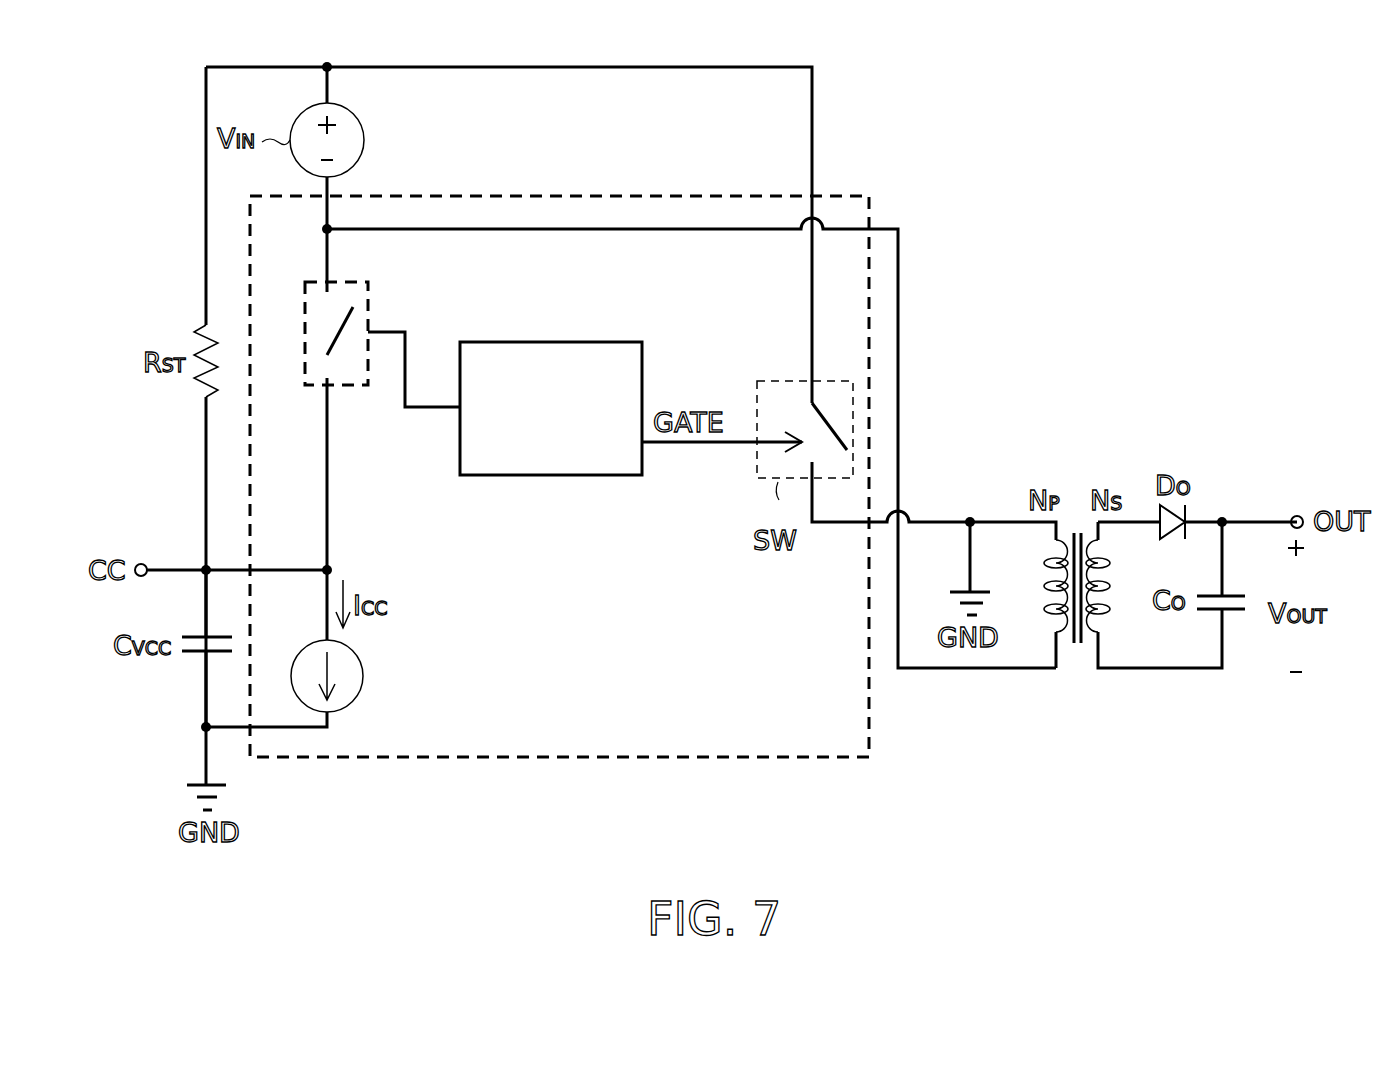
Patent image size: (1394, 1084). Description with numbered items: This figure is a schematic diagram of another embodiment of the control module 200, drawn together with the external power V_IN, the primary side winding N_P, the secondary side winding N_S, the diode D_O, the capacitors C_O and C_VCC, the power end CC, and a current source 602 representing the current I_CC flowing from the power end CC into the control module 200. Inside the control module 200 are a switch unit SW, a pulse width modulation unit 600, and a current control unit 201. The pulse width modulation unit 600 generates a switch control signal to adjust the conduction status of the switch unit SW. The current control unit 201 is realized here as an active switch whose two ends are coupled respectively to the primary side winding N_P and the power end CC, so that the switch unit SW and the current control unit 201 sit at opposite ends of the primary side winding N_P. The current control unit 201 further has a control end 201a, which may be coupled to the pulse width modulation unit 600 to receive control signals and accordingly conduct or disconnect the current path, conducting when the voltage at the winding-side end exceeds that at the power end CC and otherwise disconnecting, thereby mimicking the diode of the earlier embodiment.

The control module 200 is at (872, 721).
The current control unit 201 is at (372, 286).
The control end 201a is at (371, 336).
The pulse width modulation unit 600 is at (549, 342).
The current source 602 is at (364, 676).